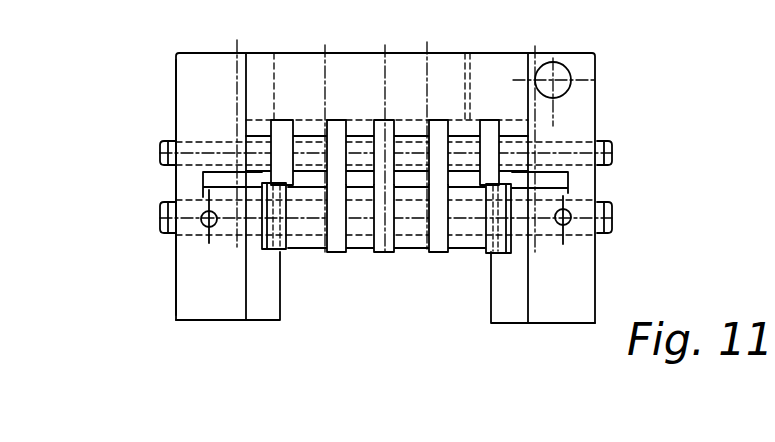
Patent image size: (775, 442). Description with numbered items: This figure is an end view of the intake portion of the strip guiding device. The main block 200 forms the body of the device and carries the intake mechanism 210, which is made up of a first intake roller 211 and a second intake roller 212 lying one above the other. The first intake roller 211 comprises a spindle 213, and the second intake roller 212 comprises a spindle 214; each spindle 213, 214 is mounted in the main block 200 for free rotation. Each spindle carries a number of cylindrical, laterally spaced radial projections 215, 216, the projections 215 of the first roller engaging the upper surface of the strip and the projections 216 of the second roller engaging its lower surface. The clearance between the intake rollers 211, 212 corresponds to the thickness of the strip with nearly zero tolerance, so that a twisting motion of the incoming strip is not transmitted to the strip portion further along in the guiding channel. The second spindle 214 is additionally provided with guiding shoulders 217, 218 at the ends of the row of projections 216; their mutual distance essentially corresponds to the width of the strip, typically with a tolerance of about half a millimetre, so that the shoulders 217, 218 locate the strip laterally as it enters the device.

The main block 200 is at (595, 279).
The intake mechanism 210 is at (166, 185).
The first intake roller 211 is at (622, 152).
The second intake roller 212 is at (625, 224).
The spindle 213 is at (599, 140).
The spindle 214 is at (611, 206).
The radial projections 215 is at (490, 121).
The radial projections 216 is at (490, 253).
The guiding shoulder 217 is at (282, 249).
The guiding shoulder 218 is at (512, 250).